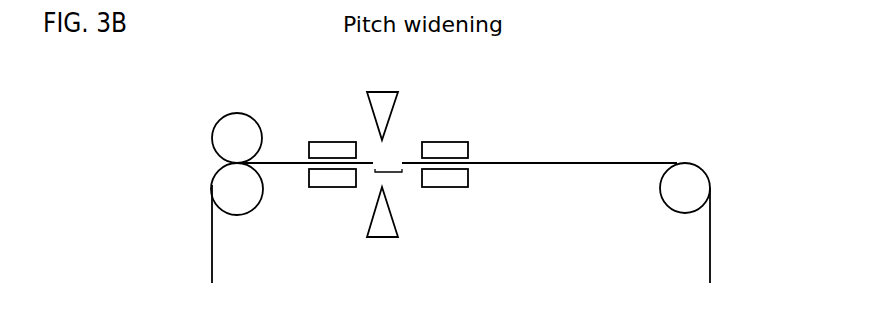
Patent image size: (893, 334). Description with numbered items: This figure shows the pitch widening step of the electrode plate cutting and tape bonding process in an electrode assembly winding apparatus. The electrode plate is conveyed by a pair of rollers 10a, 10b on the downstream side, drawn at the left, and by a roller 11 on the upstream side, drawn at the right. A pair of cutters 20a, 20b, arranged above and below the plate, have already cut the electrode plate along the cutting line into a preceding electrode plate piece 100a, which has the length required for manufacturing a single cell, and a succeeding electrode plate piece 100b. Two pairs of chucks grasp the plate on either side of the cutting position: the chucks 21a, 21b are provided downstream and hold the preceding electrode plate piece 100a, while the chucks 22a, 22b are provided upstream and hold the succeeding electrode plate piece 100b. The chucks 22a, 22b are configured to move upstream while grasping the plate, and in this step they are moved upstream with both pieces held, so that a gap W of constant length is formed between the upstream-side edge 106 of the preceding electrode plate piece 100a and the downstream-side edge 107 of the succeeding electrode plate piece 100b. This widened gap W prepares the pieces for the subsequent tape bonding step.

The roller 10a is at (218, 130).
The roller 10b is at (212, 185).
The preceding electrode plate piece 100a is at (289, 150).
The succeeding electrode plate piece 100b is at (637, 155).
The roller 11 is at (697, 178).
The cutter 20a is at (392, 91).
The cutter 20b is at (377, 237).
The chuck 21a is at (313, 142).
The chuck 21b is at (313, 187).
The chuck 22a is at (466, 141).
The chuck 22b is at (466, 188).
The upstream-side edge 106 is at (372, 148).
The downstream-side edge 107 is at (412, 154).
The gap W is at (388, 172).